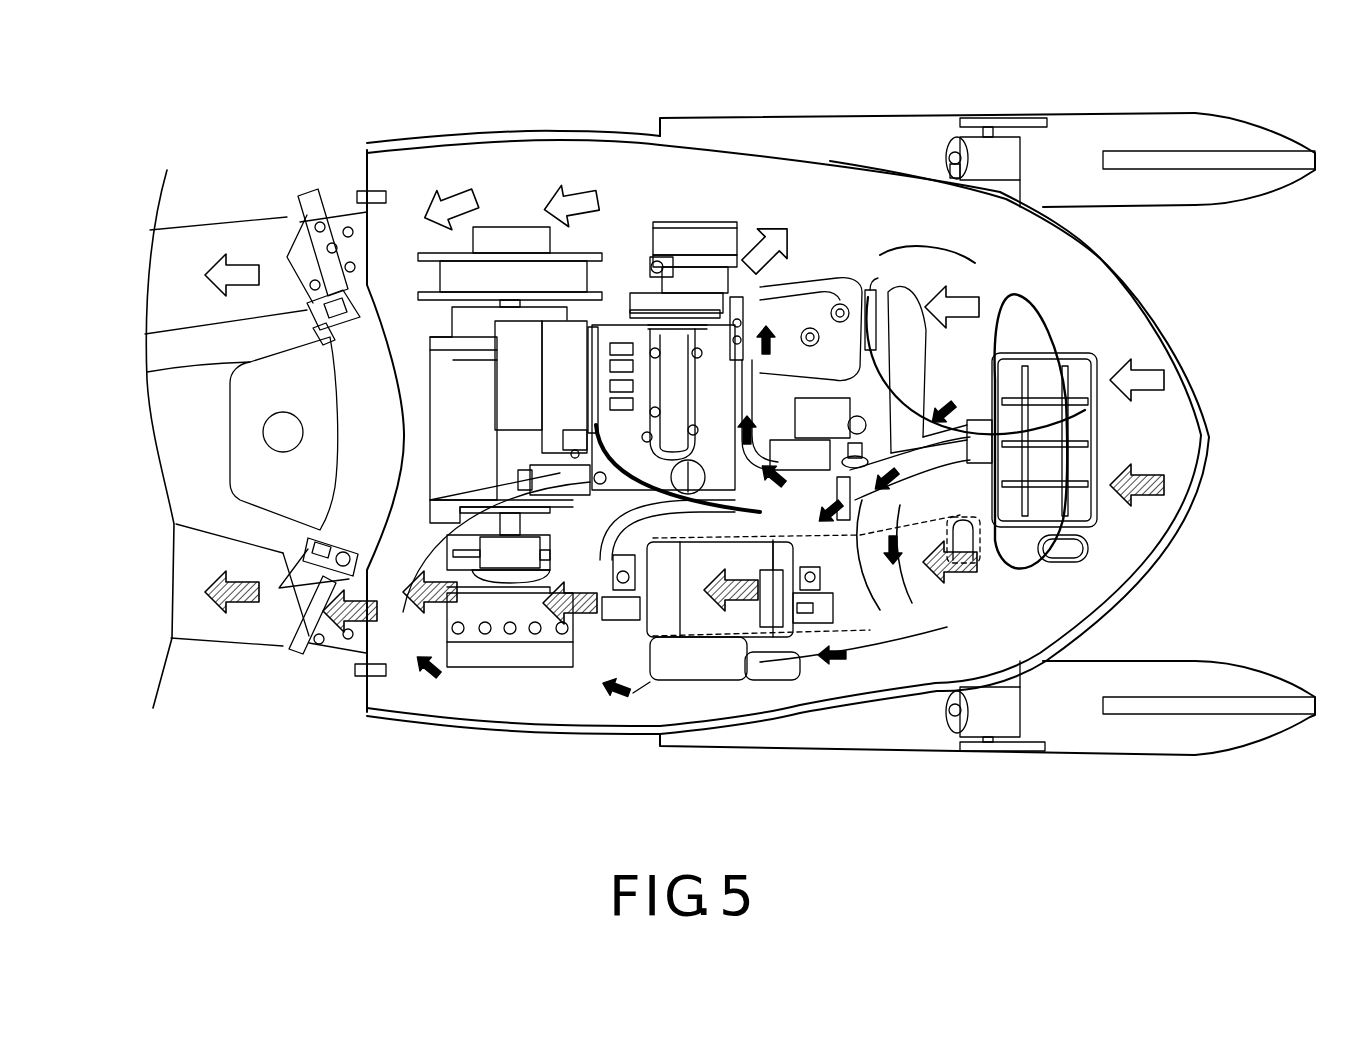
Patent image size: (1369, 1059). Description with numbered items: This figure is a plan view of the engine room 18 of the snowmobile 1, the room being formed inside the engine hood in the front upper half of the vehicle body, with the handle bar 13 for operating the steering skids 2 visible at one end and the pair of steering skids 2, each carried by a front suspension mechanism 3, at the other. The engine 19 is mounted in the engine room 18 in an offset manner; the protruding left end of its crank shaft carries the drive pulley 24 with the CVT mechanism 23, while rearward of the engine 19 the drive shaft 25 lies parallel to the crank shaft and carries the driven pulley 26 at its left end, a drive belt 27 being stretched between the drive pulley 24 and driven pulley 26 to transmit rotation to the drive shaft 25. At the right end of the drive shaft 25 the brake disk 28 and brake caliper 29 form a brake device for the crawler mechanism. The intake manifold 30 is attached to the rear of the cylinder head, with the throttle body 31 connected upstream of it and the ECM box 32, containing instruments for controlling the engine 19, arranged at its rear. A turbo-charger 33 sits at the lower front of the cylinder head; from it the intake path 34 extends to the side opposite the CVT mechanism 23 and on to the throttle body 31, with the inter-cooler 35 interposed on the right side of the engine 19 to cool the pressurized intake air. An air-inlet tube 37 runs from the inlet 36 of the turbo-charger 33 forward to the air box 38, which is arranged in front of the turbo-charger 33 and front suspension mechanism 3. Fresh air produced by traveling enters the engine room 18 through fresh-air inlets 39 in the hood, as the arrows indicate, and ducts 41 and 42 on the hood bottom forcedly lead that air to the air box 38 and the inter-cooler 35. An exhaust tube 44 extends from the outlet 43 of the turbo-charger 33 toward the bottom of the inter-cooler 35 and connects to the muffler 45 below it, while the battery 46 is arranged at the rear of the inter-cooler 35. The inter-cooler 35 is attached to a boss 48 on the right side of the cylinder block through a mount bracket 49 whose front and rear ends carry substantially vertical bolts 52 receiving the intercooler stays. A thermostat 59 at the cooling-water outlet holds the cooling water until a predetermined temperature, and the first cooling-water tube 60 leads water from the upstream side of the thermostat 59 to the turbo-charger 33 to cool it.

The snowmobile 1 is at (787, 100).
The steering skids 2 is at (1195, 113).
The front suspension mechanisms 3 is at (1000, 145).
The handle bar 13 is at (297, 227).
The engine room 18 is at (855, 213).
The engine 19 is at (822, 208).
The CVT mechanism 23 is at (722, 232).
The drive pulley 24 is at (640, 270).
The drive shaft 25 is at (510, 527).
The driven pulley 26 is at (425, 258).
The drive belt 27 is at (623, 268).
The brake disk 28 is at (463, 552).
The brake caliper 29 is at (500, 562).
The intake manifold 30 is at (553, 333).
The throttle body 31 is at (393, 560).
The ECM box 32 is at (508, 333).
The turbo-charger 33 is at (785, 600).
The intake path 34 is at (848, 603).
The inter-cooler 35 is at (693, 623).
The inlet 36 is at (965, 432).
The air-inlet tube 37 is at (993, 380).
The air box 38 is at (1080, 507).
The fresh-air inlets 39 is at (1017, 320).
The duct 41 is at (995, 575).
The duct 42 is at (760, 643).
The outlet 43 is at (860, 288).
The exhaust tube 44 is at (912, 585).
The muffler 45 is at (650, 690).
The battery 46 is at (557, 662).
The boss 48 is at (723, 523).
The mount bracket 49 is at (627, 693).
The bolts 52 is at (617, 573).
The thermostat 59 is at (678, 262).
The first cooling-water tube 60 is at (805, 294).